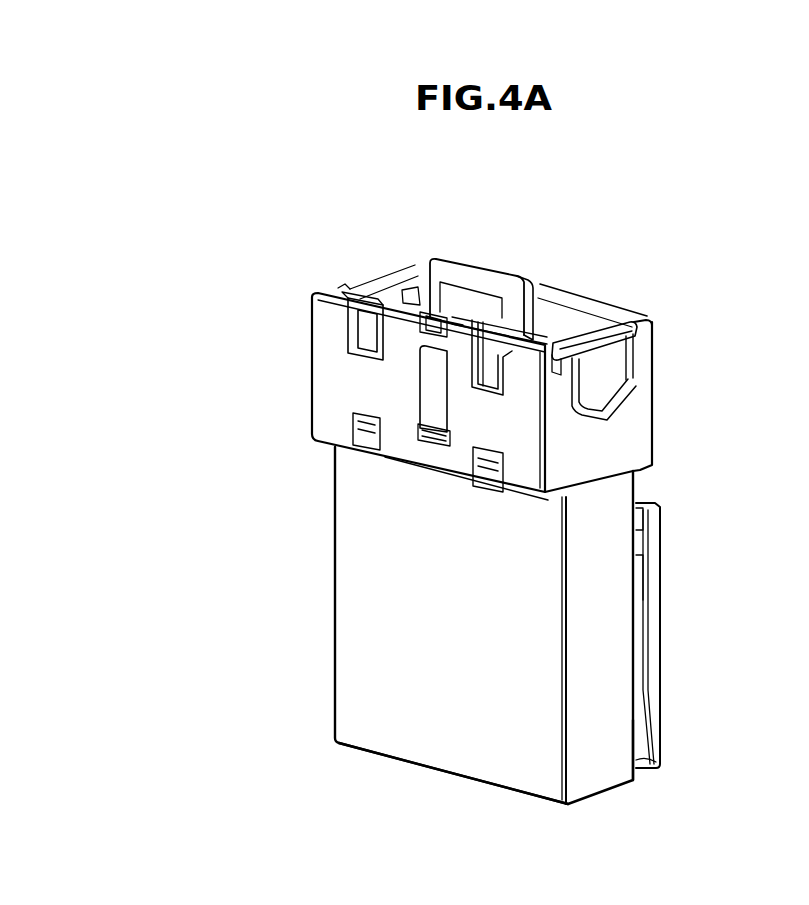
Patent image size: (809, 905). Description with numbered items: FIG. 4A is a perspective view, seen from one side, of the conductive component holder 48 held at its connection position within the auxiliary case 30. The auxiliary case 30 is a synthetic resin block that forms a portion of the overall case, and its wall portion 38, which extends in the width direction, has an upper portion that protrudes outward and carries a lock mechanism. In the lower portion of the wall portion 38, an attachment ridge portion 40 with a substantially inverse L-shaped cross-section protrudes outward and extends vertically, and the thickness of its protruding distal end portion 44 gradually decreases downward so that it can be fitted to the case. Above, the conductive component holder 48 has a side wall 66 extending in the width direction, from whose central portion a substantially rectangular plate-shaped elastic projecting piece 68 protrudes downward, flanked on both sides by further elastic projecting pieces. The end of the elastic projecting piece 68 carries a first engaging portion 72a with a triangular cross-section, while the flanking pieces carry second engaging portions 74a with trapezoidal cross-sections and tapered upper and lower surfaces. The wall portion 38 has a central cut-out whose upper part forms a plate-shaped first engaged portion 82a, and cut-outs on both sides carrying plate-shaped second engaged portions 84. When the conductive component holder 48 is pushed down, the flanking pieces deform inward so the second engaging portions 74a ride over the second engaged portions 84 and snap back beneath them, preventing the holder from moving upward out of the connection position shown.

The conductive component holder 48 is at (460, 357).
The first engaged portion 82a is at (425, 335).
The side wall 66 is at (372, 340).
The elastic projecting piece 68 is at (423, 345).
The first engaging portion 72a is at (430, 427).
The second engaged portion 84 is at (368, 402).
The second engaging portion 74a is at (372, 420).
The auxiliary case 30 is at (601, 607).
The wall portion 38 is at (372, 664).
The attachment ridge portion 40 is at (692, 635).
The protruding distal end portion 44 is at (653, 682).